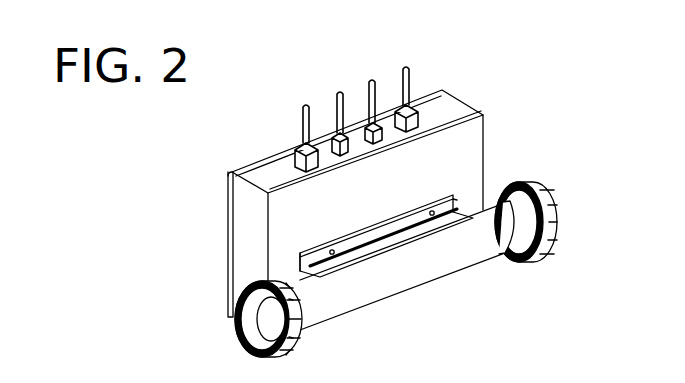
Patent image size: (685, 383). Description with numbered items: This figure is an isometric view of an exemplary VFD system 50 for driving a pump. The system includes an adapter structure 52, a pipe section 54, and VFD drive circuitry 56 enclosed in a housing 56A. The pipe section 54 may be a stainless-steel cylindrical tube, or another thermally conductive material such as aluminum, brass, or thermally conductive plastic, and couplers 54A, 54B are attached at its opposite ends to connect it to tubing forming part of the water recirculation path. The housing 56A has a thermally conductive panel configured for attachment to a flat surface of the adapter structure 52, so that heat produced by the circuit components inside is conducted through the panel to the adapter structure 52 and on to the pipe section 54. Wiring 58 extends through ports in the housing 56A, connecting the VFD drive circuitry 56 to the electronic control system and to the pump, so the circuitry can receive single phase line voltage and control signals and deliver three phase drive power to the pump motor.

The VFD system 50 is at (128, 199).
The adapter structure 52 is at (397, 240).
The pipe section 54 is at (423, 273).
The coupler 54A is at (243, 338).
The coupler 54B is at (555, 241).
The VFD drive circuitry 56 is at (229, 154).
The housing 56A is at (243, 228).
The wiring 58 is at (417, 62).